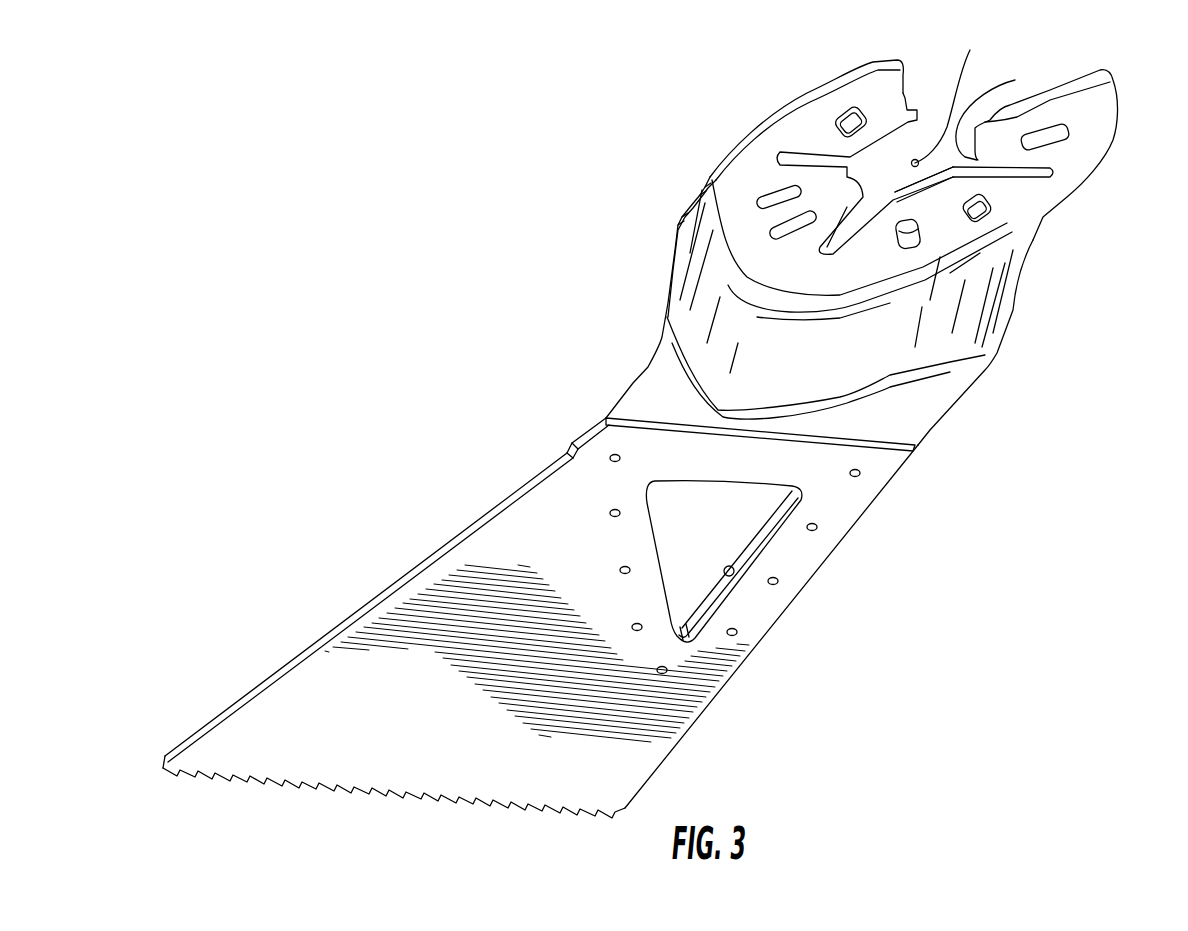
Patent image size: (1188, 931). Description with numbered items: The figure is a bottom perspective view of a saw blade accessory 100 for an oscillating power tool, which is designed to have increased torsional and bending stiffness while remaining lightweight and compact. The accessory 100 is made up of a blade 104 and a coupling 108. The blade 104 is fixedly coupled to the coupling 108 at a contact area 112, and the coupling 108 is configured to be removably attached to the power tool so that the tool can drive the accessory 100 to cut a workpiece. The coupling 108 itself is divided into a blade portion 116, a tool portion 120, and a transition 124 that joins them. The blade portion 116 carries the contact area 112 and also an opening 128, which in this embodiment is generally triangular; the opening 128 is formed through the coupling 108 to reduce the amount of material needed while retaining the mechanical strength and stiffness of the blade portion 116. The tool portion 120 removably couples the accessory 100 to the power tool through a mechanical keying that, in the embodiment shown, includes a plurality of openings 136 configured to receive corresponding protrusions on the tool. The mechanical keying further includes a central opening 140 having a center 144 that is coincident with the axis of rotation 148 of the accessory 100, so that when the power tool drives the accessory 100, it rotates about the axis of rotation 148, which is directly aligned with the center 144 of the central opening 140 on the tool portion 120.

The accessory 100 is at (951, 605).
The blade 104 is at (660, 731).
The coupling 108 is at (980, 347).
The contact area 112 is at (773, 537).
The blade portion 116 is at (915, 445).
The tool portion 120 is at (1073, 177).
The transition 124 is at (980, 315).
The opening 128 is at (732, 577).
The openings 136 is at (860, 222).
The central opening 140 is at (1003, 110).
The center 144 is at (965, 98).
The axis of rotation 148 is at (913, 195).